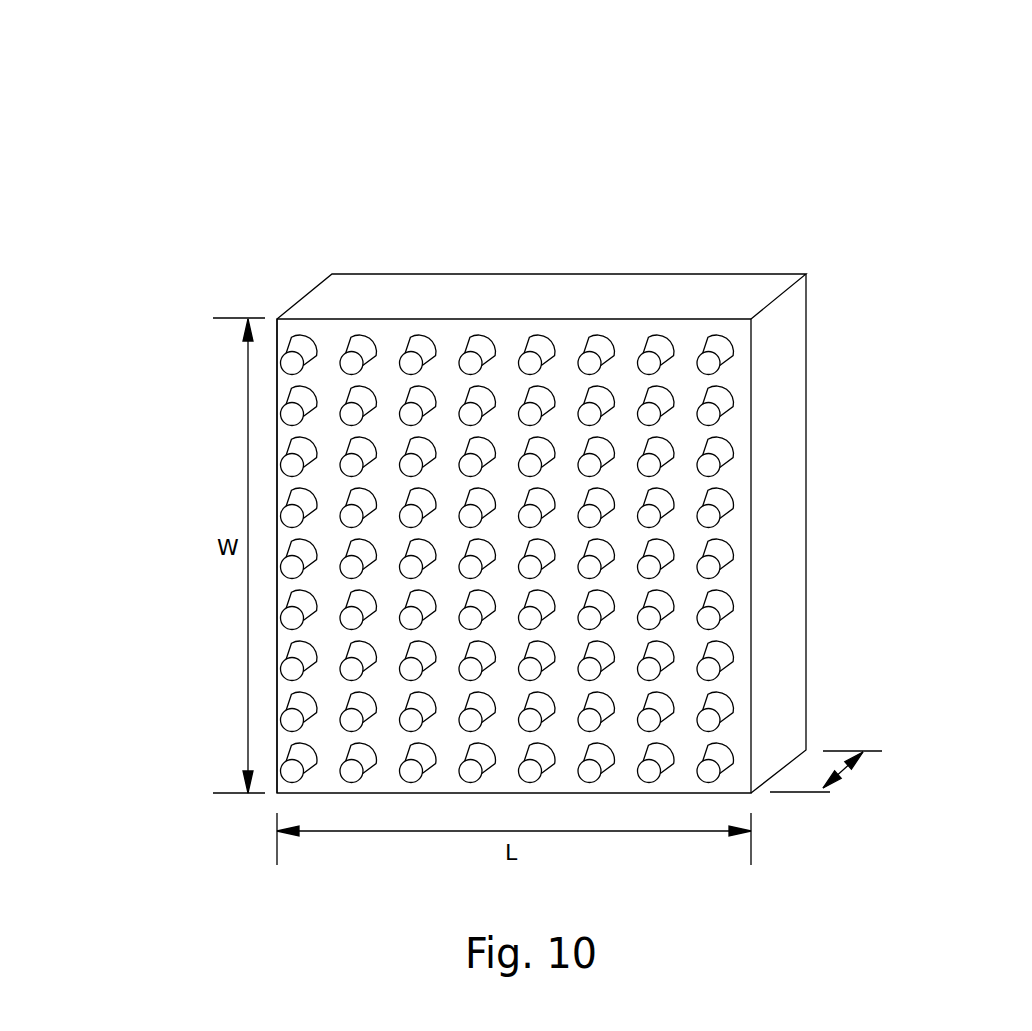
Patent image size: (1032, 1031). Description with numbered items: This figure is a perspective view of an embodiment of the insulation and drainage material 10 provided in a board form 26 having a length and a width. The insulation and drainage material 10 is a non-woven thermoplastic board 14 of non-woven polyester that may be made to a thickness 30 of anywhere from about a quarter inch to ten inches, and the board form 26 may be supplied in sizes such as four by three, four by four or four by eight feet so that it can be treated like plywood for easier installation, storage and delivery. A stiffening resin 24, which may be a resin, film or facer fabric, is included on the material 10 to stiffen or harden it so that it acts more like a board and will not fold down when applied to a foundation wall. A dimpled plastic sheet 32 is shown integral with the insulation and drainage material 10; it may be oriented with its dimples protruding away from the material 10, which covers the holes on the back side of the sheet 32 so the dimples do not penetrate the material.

The insulation and drainage material 10 is at (525, 185).
The stiffening resin 24 is at (610, 287).
The non-woven thermoplastic board 14 is at (775, 517).
The board form 26 is at (198, 662).
The dimpled plastic sheet 32 is at (295, 443).
The thickness 30 is at (843, 770).